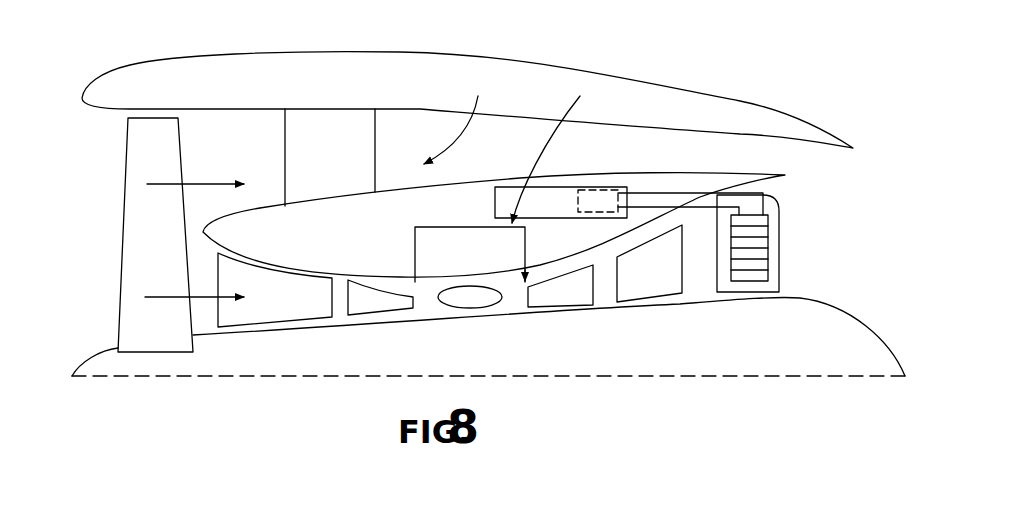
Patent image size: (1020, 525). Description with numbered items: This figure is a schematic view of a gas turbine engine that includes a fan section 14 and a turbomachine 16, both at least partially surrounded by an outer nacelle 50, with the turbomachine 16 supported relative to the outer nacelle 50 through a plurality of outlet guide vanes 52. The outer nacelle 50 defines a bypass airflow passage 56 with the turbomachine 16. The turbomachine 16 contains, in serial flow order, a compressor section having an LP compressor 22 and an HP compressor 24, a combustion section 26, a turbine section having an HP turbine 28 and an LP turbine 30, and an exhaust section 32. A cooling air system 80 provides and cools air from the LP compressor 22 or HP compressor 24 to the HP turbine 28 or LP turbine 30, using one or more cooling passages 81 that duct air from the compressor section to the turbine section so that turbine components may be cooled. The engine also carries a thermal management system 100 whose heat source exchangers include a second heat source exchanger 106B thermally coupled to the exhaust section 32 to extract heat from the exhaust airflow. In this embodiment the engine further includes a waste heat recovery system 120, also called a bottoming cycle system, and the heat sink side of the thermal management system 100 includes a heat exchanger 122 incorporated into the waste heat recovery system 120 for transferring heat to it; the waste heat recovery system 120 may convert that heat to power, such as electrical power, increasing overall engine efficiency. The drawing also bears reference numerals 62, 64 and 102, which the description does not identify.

The fan section 14 is at (103, 170).
The turbomachine 16 is at (642, 186).
The LP compressor 22 is at (275, 290).
The HP compressor 24 is at (373, 305).
The combustion section 26 is at (494, 271).
The HP turbine 28 is at (548, 297).
The LP turbine 30 is at (638, 279).
The exhaust section 32 is at (780, 260).
The outer nacelle 50 is at (387, 73).
The outlet guide vanes 52 is at (285, 165).
The bypass airflow passage 56 is at (494, 146).
The core airflow 62 is at (175, 295).
The bypass airflow 64 is at (206, 182).
The cooling air system 80 is at (561, 150).
The cooling passages 81 is at (415, 252).
The thermal management system 100 is at (457, 118).
The power line 102 is at (690, 193).
The second heat source exchanger 106B is at (770, 243).
The waste heat recovery system 120 is at (495, 197).
The heat exchanger 122 is at (588, 189).